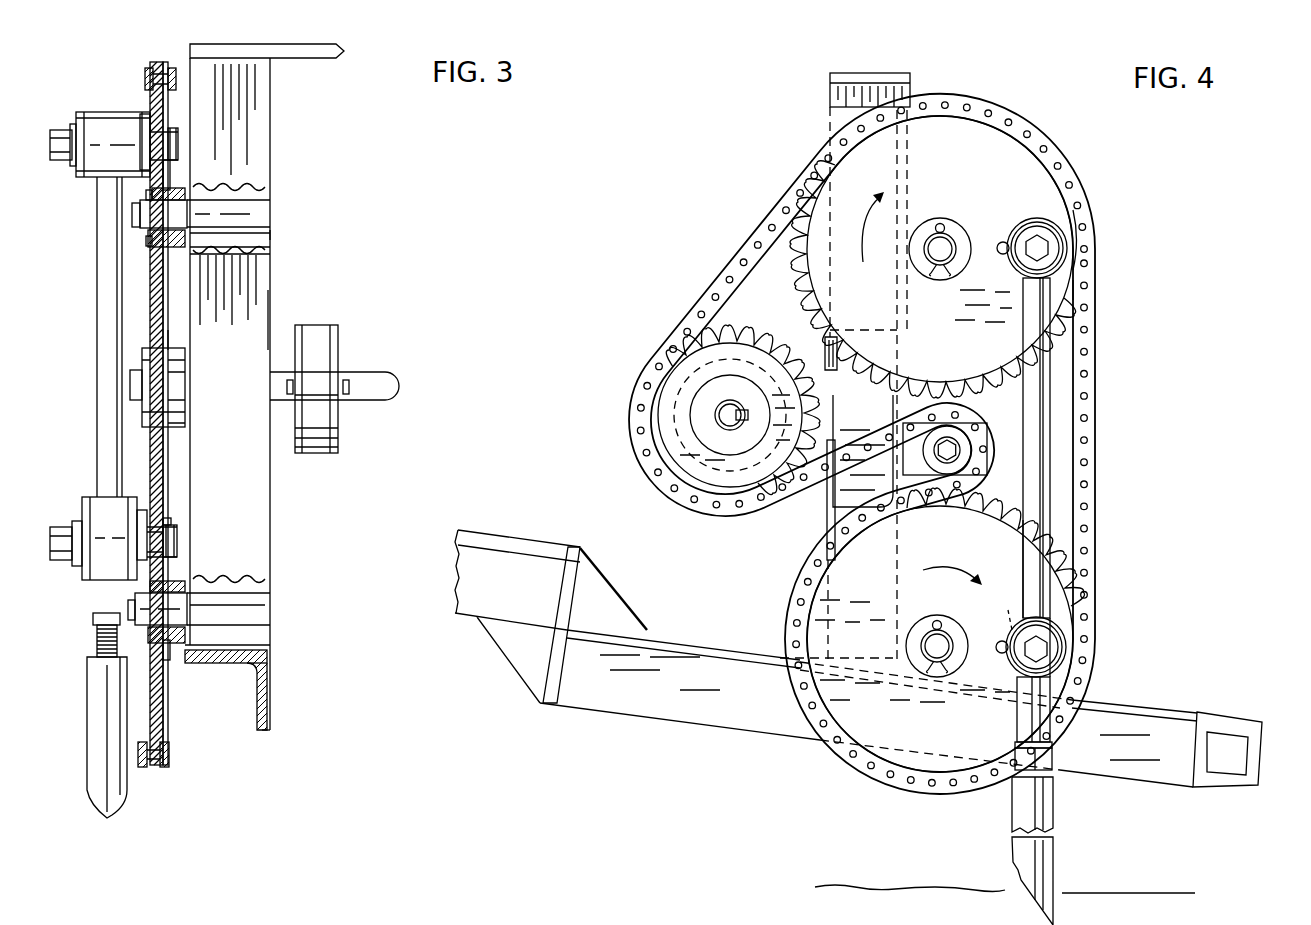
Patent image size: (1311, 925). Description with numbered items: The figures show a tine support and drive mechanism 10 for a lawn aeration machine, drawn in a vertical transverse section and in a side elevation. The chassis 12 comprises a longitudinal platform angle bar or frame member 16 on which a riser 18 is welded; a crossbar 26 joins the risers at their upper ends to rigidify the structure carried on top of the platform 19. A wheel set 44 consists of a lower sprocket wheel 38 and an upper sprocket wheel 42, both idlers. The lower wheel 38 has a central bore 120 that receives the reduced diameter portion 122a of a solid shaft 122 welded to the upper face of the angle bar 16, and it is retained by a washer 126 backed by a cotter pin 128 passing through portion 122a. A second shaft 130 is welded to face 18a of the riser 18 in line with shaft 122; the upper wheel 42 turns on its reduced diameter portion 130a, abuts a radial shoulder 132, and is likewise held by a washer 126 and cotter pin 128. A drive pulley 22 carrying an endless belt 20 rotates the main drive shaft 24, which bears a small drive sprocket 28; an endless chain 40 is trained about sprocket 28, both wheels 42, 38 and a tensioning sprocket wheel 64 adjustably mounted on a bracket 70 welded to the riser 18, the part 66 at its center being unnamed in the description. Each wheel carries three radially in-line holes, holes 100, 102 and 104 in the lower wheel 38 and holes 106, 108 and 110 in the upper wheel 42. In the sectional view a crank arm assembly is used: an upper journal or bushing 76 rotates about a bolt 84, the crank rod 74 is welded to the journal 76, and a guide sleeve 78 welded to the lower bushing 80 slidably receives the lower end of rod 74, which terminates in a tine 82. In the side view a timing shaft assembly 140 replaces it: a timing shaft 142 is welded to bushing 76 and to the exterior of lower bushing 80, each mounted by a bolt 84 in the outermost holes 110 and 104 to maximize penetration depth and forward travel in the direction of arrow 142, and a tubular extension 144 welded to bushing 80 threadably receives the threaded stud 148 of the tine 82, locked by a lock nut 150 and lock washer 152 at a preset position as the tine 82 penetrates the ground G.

In FIG. 3, the tine support and drive mechanism 10 is at (360, 275).
In FIG. 4, the tine support and drive mechanism 10 is at (1162, 332).
In FIG. 3, the chassis 12 is at (235, 670).
In FIG. 4, the chassis 12 is at (666, 719).
In FIG. 3, the platform angle bar 16 is at (268, 656).
In FIG. 4, the platform angle bar 16 is at (668, 668).
In FIG. 4, the riser 18 is at (830, 522).
In FIG. 3, the face of riser 18a is at (272, 320).
In FIG. 3, the platform 19 is at (288, 684).
In FIG. 4, the platform 19 is at (626, 603).
In FIG. 3, the endless belt 20 is at (318, 360).
In FIG. 3, the drive pulley 22 is at (338, 428).
In FIG. 3, the main drive shaft 24 is at (372, 386).
In FIG. 4, the main drive shaft 24 is at (718, 416).
In FIG. 3, the crossbar 26 is at (338, 50).
In FIG. 4, the crossbar 26 is at (870, 73).
In FIG. 3, the drive sprocket 28 is at (168, 427).
In FIG. 4, the drive sprocket 28 is at (676, 347).
In FIG. 3, the lower sprocket wheel 38 is at (168, 715).
In FIG. 3, the endless chain 40 is at (170, 68).
In FIG. 4, the endless chain 40 is at (1096, 481).
In FIG. 3, the upper sprocket wheel 42 is at (158, 326).
In FIG. 4, the upper sprocket wheel 42 is at (928, 112).
In FIG. 3, the wheel set 44 is at (168, 343).
In FIG. 4, the wheel set 44 is at (972, 504).
In FIG. 4, the tensioning sprocket wheel 64 is at (905, 430).
In FIG. 4, the idler nut 66 is at (958, 451).
In FIG. 4, the bracket 70 is at (1000, 414).
In FIG. 3, the crank rod 74 is at (100, 337).
In FIG. 3, the upper journal 76 is at (100, 112).
In FIG. 4, the upper journal 76 is at (1067, 243).
In FIG. 3, the guide sleeve 78 is at (100, 510).
In FIG. 3, the lower journal 80 is at (143, 515).
In FIG. 4, the lower journal 80 is at (1052, 616).
In FIG. 3, the tine 82 is at (100, 780).
In FIG. 4, the tine 82 is at (1043, 870).
In FIG. 3, the bolt 84 is at (177, 143).
In FIG. 4, the bolt 84 is at (1067, 258).
In FIG. 3, the hole 100 is at (168, 512).
In FIG. 4, the hole 100 is at (1000, 645).
In FIG. 3, the hole 102 is at (168, 530).
In FIG. 4, the hole 102 is at (1008, 610).
In FIG. 3, the hole 104 is at (127, 564).
In FIG. 4, the hole 104 is at (1080, 620).
In FIG. 3, the hole 106 is at (148, 115).
In FIG. 4, the hole 106 is at (1000, 244).
In FIG. 3, the hole 108 is at (172, 146).
In FIG. 4, the hole 108 is at (1026, 240).
In FIG. 3, the hole 110 is at (170, 172).
In FIG. 4, the hole 110 is at (1087, 215).
In FIG. 3, the central bore 120 is at (172, 645).
In FIG. 3, the solid shaft 122 is at (250, 613).
In FIG. 3, the reduced diameter portion 122a is at (165, 583).
In FIG. 4, the reduced diameter portion 122a is at (948, 664).
In FIG. 3, the washer 126 is at (148, 241).
In FIG. 4, the washer 126 is at (912, 252).
In FIG. 3, the cotter pin 128 is at (147, 193).
In FIG. 4, the cotter pin 128 is at (938, 214).
In FIG. 3, the second solid shaft 130 is at (262, 231).
In FIG. 3, the reduced diameter shaft portion 130a is at (170, 214).
In FIG. 4, the reduced diameter shaft portion 130a is at (950, 228).
In FIG. 3, the radial shoulder 132 is at (177, 250).
In FIG. 4, the timing shaft assembly 140 is at (1050, 532).
In FIG. 4, the timing shaft 142 is at (1050, 448).
In FIG. 3, the tubular extension 144 is at (182, 612).
In FIG. 4, the tubular extension 144 is at (1028, 716).
In FIG. 4, the threaded shaft portion 148 is at (1053, 780).
In FIG. 4, the lock nut 150 is at (1055, 763).
In FIG. 4, the lock washer 152 is at (1055, 745).
In FIG. 4, the ground G is at (905, 887).